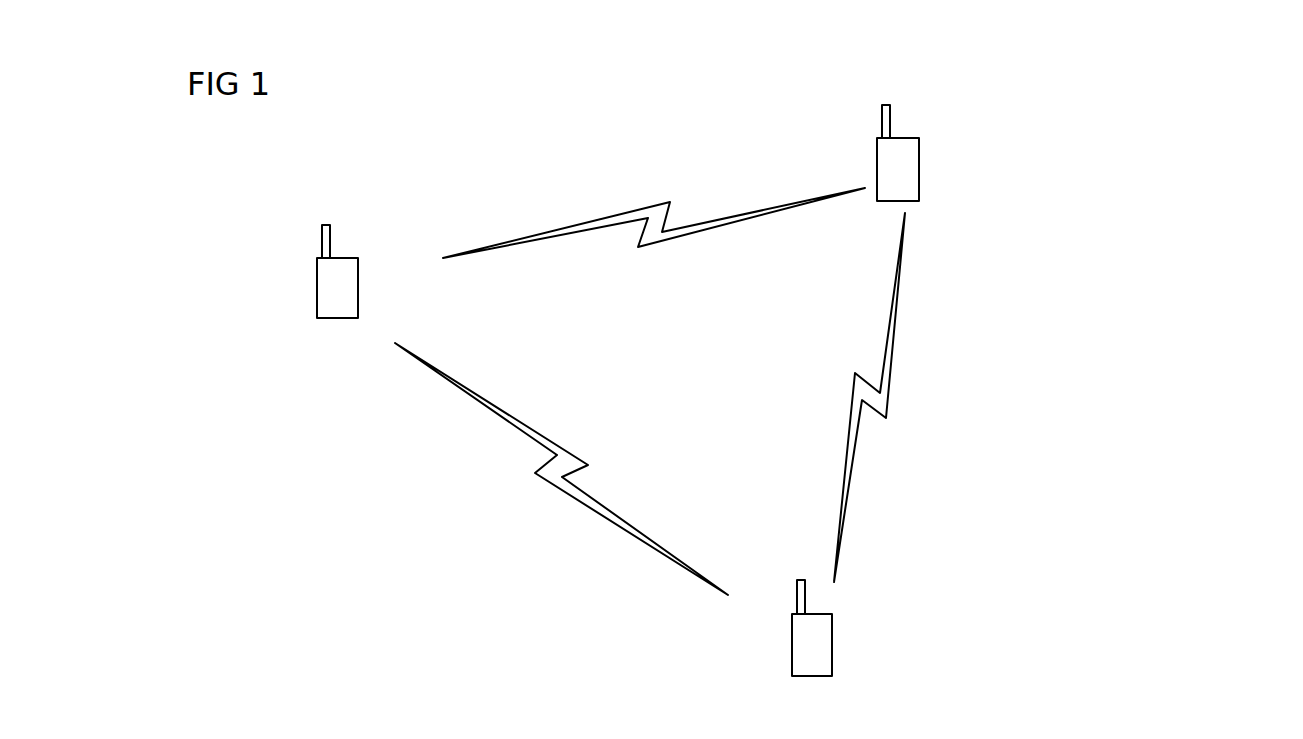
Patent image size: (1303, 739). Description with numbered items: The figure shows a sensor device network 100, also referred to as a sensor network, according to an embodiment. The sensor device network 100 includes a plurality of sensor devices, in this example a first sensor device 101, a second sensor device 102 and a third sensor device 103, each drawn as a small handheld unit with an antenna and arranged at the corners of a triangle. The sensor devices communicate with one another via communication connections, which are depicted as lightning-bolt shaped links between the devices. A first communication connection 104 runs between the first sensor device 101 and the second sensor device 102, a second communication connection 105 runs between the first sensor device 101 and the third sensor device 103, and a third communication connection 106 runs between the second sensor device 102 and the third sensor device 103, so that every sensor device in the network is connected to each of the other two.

The sensor device network 100 is at (1168, 130).
The first sensor device 101 is at (358, 265).
The second sensor device 102 is at (919, 145).
The third sensor device 103 is at (832, 620).
The first communication connection 104 is at (667, 191).
The second communication connection 105 is at (552, 442).
The third communication connection 106 is at (892, 345).